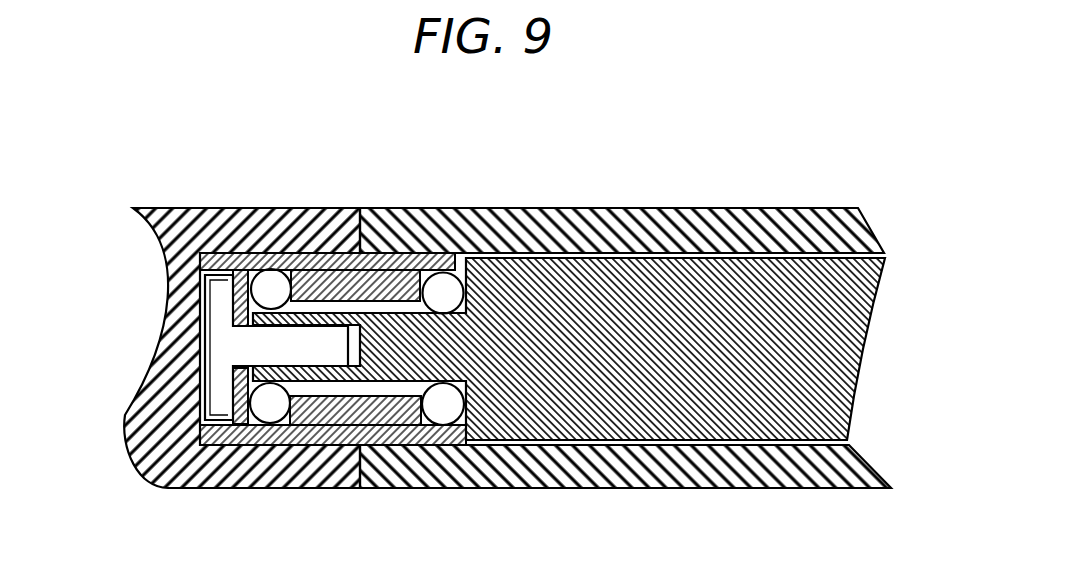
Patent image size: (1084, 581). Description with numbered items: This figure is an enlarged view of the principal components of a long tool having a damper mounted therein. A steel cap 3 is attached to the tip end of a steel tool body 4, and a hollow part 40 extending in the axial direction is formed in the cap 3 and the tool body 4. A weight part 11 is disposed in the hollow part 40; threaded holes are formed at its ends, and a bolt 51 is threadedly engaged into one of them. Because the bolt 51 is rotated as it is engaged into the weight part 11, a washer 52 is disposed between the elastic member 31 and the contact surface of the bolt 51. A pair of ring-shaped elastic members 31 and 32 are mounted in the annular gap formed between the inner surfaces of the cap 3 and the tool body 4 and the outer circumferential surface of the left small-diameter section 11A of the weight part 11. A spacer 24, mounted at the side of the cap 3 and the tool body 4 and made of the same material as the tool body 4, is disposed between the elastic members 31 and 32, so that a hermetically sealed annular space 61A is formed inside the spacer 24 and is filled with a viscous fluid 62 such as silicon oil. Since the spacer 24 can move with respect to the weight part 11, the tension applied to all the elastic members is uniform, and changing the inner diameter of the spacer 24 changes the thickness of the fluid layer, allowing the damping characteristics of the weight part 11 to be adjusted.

The cap 3 is at (218, 222).
The tool body 4 is at (612, 212).
The hollow part 40 is at (717, 248).
The weight part 11 is at (656, 417).
The left small-diameter section 11A is at (286, 300).
The viscous fluid 62 is at (380, 297).
The annular space 61A is at (328, 298).
The spacer 24 is at (335, 420).
The washer 52 is at (238, 393).
The ring-shaped elastic member 31 is at (260, 400).
The ring-shaped elastic member 32 is at (428, 403).
The bolt 51 is at (210, 393).